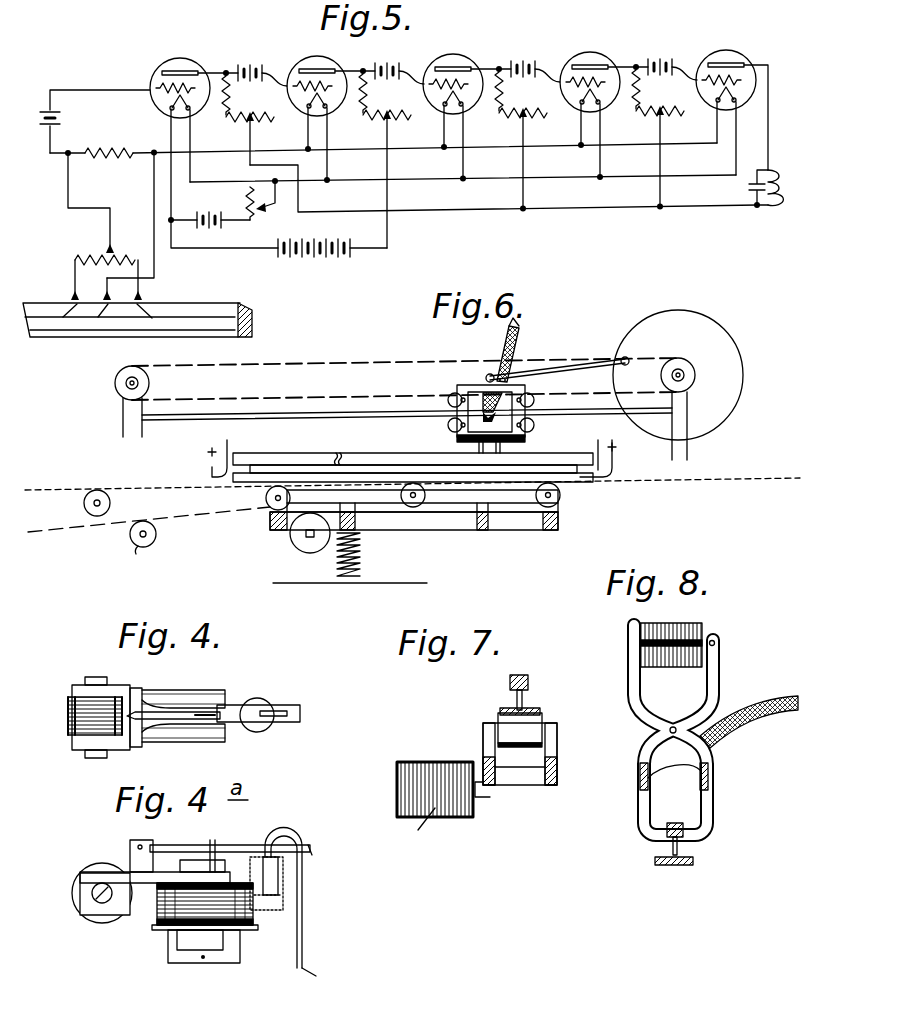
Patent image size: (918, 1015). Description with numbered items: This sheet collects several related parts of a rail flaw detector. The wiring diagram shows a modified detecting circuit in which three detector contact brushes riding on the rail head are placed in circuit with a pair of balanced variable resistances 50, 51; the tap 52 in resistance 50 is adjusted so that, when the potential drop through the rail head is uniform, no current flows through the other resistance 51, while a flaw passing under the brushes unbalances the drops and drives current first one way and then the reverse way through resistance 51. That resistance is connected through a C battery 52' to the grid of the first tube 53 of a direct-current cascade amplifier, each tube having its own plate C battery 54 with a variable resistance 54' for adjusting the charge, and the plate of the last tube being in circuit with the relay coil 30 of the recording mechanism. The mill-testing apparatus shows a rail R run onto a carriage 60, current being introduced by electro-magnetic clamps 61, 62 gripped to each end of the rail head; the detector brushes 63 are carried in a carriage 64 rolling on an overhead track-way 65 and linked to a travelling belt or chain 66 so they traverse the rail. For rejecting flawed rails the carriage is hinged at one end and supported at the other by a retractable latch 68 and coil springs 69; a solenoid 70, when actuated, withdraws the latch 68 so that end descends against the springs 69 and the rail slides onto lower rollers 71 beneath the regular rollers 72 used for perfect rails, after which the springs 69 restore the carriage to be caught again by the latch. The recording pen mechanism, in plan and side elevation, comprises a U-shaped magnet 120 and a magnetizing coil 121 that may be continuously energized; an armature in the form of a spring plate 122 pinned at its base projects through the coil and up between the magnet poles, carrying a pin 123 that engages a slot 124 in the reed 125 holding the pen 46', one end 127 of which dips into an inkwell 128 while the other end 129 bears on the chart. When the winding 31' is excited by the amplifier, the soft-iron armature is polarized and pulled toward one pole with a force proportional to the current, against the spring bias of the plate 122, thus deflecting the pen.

In FIG. 5, the first tube 53 is at (160, 74).
In FIG. 5, the C battery 54 is at (662, 53).
In FIG. 5, the variable resistance 54' is at (248, 119).
In FIG. 5, the C battery 52' is at (95, 121).
In FIG. 5, the variable resistance 51 is at (109, 140).
In FIG. 5, the tap 52 is at (88, 203).
In FIG. 5, the variable resistance 50 is at (110, 248).
In FIG. 5, the relay coil 30 is at (780, 207).
In FIG. 6, the travelling belt or chain 66 is at (224, 366).
In FIG. 6, the overhead track-way 65 is at (262, 418).
In FIG. 6, the carriage 64 is at (458, 392).
In FIG. 6, the detector brushes 63 is at (460, 443).
In FIG. 6, the rail R is at (302, 458).
In FIG. 7, the rail R is at (510, 680).
In FIG. 8, the rail R is at (686, 861).
In FIG. 6, the electro-magnetic clamp 62 is at (199, 458).
In FIG. 6, the electro-magnetic clamp 61 is at (614, 458).
In FIG. 8, the electro-magnetic clamp 61 is at (645, 695).
In FIG. 6, the carriage 60 is at (560, 498).
In FIG. 7, the carriage 60 is at (557, 770).
In FIG. 6, the coil spring 69 is at (360, 557).
In FIG. 7, the coil spring 69 is at (408, 762).
In FIG. 6, the regular rollers 72 is at (84, 503).
In FIG. 6, the rollers 71 is at (139, 556).
In FIG. 4, the magnetizing coil 121 is at (70, 712).
In FIG. 4A, the magnetizing coil 121 is at (75, 895).
In FIG. 4, the U-shaped magnet 120 is at (200, 700).
In FIG. 4, the pin 123 is at (225, 712).
In FIG. 4A, the pin 123 is at (210, 845).
In FIG. 4, the slot 124 is at (238, 724).
In FIG. 4, the reed 125 is at (300, 715).
In FIG. 4A, the reed 125 is at (313, 843).
In FIG. 4A, the pen end 127 is at (283, 888).
In FIG. 4A, the inkwell 128 is at (267, 905).
In FIG. 4A, the recording pen 46' is at (308, 898).
In FIG. 4A, the pen end 129 is at (331, 976).
In FIG. 4A, the winding 31' is at (185, 919).
In FIG. 4A, the spring plate armature 122 is at (203, 950).
In FIG. 7, the retractable latch 68 is at (488, 797).
In FIG. 7, the solenoid 70 is at (414, 839).